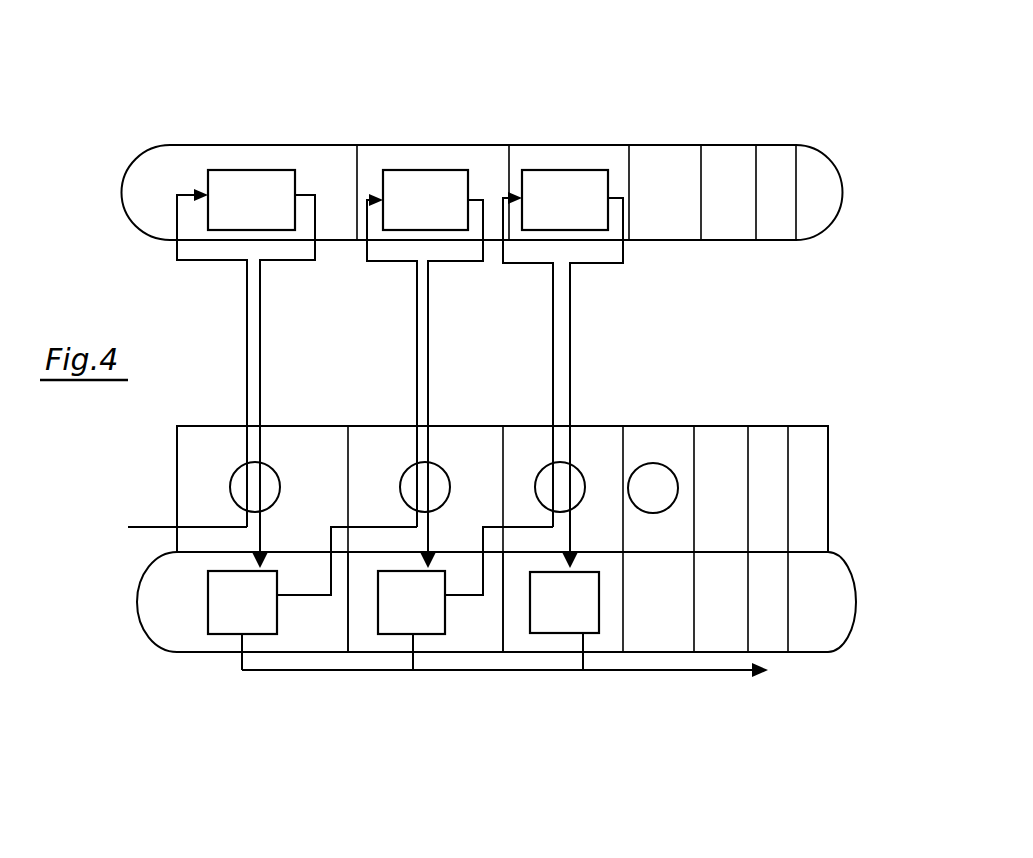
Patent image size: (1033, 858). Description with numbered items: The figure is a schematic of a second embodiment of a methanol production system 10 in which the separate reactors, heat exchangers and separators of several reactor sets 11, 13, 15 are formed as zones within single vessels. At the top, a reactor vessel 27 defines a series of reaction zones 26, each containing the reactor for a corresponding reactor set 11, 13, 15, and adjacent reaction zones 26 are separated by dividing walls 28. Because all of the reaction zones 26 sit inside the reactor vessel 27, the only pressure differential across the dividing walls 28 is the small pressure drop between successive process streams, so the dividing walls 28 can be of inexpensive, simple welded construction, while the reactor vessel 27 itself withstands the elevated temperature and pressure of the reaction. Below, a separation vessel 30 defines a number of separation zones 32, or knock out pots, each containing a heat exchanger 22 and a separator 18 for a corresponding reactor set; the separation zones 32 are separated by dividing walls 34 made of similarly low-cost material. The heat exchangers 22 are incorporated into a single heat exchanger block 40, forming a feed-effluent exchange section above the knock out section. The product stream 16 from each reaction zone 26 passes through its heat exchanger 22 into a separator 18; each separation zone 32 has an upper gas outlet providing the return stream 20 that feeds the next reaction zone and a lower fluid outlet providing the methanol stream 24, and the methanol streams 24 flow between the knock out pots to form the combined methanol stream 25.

The system 10 is at (72, 262).
The reactor set 11 is at (298, 45).
The reactor set 13 is at (460, 125).
The reactor set 15 is at (682, 16).
The product stream 16 is at (262, 331).
The separator 18 is at (290, 568).
The return stream 20 is at (415, 341).
The heat exchanger 22 is at (270, 467).
The methanol stream 24 is at (242, 674).
The combined stream 25 is at (691, 688).
The reaction zone 26 is at (227, 140).
The reactor vessel 27 is at (316, 140).
The dividing wall 28 is at (370, 140).
The separation vessel 30 is at (156, 662).
The separation zone 32 is at (197, 652).
The dividing wall 34 is at (347, 620).
The heat exchanger block 40 is at (165, 470).